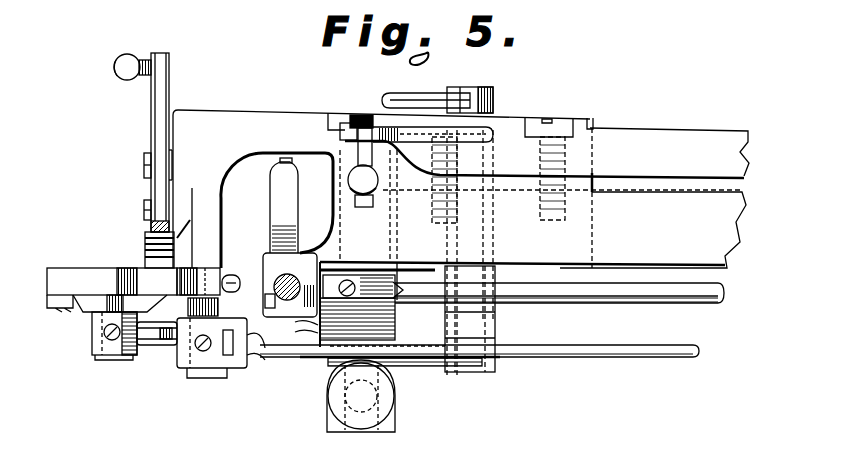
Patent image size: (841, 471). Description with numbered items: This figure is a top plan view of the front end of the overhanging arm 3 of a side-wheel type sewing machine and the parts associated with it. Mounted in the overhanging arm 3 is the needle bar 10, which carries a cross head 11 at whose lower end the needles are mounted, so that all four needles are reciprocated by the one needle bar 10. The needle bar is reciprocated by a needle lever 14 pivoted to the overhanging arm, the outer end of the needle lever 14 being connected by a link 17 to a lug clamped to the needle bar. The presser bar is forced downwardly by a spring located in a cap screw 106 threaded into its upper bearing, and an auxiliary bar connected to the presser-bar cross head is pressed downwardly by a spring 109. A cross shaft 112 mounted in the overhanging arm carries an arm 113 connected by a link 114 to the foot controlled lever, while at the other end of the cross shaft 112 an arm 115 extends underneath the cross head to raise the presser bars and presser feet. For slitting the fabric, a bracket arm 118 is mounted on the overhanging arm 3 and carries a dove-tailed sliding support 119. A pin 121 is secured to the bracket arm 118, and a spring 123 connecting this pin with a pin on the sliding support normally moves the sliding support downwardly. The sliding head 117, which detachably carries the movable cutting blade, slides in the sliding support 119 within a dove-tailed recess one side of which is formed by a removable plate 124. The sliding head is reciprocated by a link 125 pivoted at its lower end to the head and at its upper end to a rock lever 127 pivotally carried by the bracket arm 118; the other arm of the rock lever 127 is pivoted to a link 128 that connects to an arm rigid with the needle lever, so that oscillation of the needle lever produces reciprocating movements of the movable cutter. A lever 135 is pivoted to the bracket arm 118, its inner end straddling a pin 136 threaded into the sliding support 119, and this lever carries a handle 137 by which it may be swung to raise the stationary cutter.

The overhanging arm 3 is at (653, 220).
The needle bar 10 is at (290, 285).
The cross head 11 is at (296, 196).
The needle lever 14 is at (650, 305).
The link 17 is at (355, 243).
The cap screw 106 is at (396, 400).
The spring 109 is at (547, 181).
The cross shaft 112 is at (480, 318).
The arm 113 is at (425, 103).
The link 114 is at (398, 94).
The arm 115 is at (413, 344).
The sliding head 117 is at (93, 300).
The bracket arm 118 is at (383, 189).
The sliding support 119 is at (190, 224).
The pin 121 is at (230, 274).
The spring 123 is at (231, 308).
The removable plate 124 is at (58, 302).
The link 125 is at (104, 357).
The rock lever 127 is at (153, 344).
The link 128 is at (638, 360).
The lever 135 is at (170, 96).
The pin 136 is at (146, 214).
The handle 137 is at (124, 57).